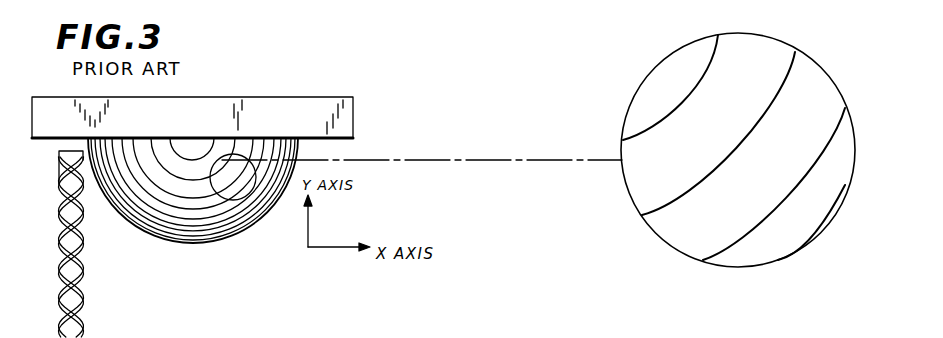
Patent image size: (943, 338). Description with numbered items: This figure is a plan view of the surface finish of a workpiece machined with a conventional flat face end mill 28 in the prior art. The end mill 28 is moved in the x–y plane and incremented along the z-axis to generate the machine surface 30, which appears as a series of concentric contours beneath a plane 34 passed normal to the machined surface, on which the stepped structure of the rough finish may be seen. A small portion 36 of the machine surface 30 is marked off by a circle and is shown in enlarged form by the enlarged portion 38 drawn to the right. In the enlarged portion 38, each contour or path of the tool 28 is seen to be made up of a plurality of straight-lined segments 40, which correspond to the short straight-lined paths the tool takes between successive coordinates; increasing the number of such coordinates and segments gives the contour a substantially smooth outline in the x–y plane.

The flat face end mill 28 is at (78, 323).
The machine surface 30 is at (230, 243).
The plane 34 is at (354, 110).
The small portion 36 is at (225, 150).
The enlarged portion 38 is at (772, 35).
The straight-lined segments 40 is at (752, 133).